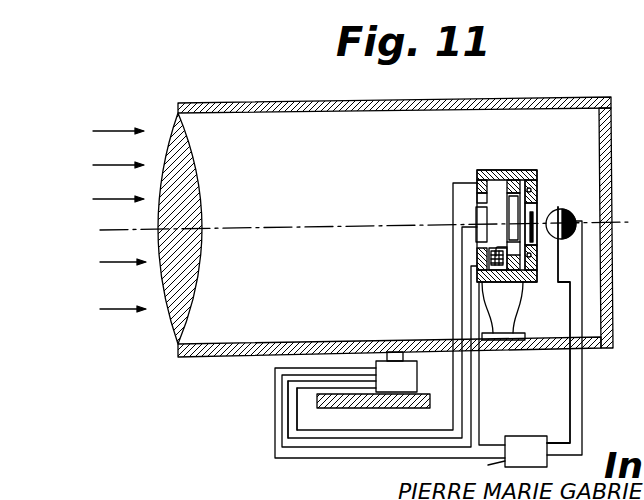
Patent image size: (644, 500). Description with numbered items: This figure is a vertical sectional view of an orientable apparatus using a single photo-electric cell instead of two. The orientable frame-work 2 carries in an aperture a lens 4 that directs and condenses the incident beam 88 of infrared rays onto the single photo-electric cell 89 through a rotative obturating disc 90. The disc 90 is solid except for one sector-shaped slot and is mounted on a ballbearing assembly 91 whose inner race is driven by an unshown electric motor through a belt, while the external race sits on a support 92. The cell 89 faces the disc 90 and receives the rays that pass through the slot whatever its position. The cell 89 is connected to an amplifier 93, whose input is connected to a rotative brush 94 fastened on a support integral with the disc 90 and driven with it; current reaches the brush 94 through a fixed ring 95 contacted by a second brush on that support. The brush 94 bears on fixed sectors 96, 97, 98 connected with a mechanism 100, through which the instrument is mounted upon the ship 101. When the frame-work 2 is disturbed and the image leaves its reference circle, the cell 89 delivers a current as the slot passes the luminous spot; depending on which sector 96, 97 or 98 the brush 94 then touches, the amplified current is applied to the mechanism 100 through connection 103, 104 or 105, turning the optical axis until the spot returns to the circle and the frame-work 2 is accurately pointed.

The frame-work 2 is at (226, 357).
The lens 4 is at (181, 306).
The incident beam 88 is at (121, 199).
The photo-electric cell 89 is at (573, 216).
The rotative obturating disc 90 is at (552, 241).
The ballbearing assembly 91 is at (536, 172).
The support 92 is at (482, 170).
The amplifier 93 is at (527, 437).
The rotative brush 94 is at (490, 263).
The fixed ring 95 is at (512, 170).
The fixed sector 96 is at (477, 180).
The fixed sector 97 is at (480, 215).
The fixed sector 98 is at (483, 252).
The mechanism 100 is at (415, 361).
The ship 101 is at (392, 408).
The connection 103 is at (297, 412).
The connection 104 is at (288, 437).
The connection 105 is at (332, 458).